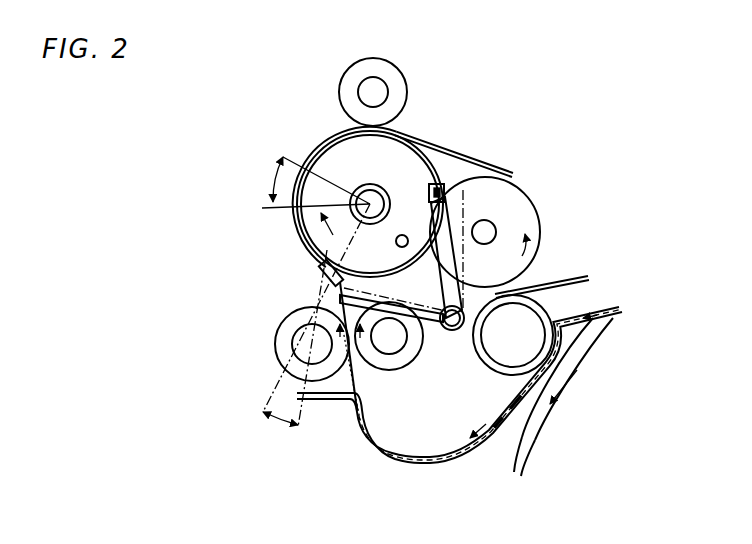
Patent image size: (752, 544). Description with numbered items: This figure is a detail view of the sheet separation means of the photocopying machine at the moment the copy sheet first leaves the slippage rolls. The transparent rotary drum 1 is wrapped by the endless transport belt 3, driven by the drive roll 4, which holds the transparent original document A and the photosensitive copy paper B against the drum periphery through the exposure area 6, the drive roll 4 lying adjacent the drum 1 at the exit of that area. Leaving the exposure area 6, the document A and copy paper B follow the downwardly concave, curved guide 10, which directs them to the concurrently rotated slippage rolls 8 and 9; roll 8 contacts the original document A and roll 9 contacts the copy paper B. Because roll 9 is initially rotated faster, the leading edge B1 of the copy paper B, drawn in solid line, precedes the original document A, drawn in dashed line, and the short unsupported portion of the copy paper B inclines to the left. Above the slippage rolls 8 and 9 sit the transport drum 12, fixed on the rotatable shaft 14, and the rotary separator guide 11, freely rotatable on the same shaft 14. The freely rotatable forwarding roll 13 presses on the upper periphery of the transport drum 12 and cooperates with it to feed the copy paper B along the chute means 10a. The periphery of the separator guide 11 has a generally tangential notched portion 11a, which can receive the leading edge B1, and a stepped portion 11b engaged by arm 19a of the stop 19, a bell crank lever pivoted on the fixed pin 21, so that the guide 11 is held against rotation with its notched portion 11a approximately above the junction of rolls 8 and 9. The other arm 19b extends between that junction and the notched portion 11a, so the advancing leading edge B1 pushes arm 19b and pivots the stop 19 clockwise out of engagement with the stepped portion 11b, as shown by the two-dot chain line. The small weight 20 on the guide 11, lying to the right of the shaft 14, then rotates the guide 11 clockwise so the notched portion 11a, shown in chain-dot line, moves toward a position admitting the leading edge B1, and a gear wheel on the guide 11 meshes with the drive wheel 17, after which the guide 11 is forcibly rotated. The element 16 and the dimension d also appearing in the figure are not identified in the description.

The transparent rotary drum 1 is at (512, 452).
The endless transport belt 3 is at (563, 278).
The drive roll 4 is at (548, 310).
The exposure area 6 is at (593, 318).
The slippage roll 8 is at (278, 345).
The slippage roll 9 is at (388, 356).
The concave guide 10 is at (450, 463).
The chute means 10a is at (446, 150).
The rotary separator guide 11 is at (318, 146).
The notched portion 11a is at (318, 270).
The stepped portion 11b is at (428, 195).
The transport drum 12 is at (343, 130).
The forwarding roll 13 is at (385, 72).
The rotatable shaft 14 is at (365, 195).
The roller 16 is at (490, 232).
The drive wheel 17 is at (513, 200).
The stop 19 is at (442, 246).
The stop arm 19a is at (447, 188).
The stop arm 19b is at (443, 328).
The small weight 20 is at (397, 237).
The fixed pin 21 is at (455, 331).
The original document A is at (410, 458).
The copy paper B is at (400, 452).
The leading edge of copy paper B1 is at (335, 292).
The distance d is at (324, 229).